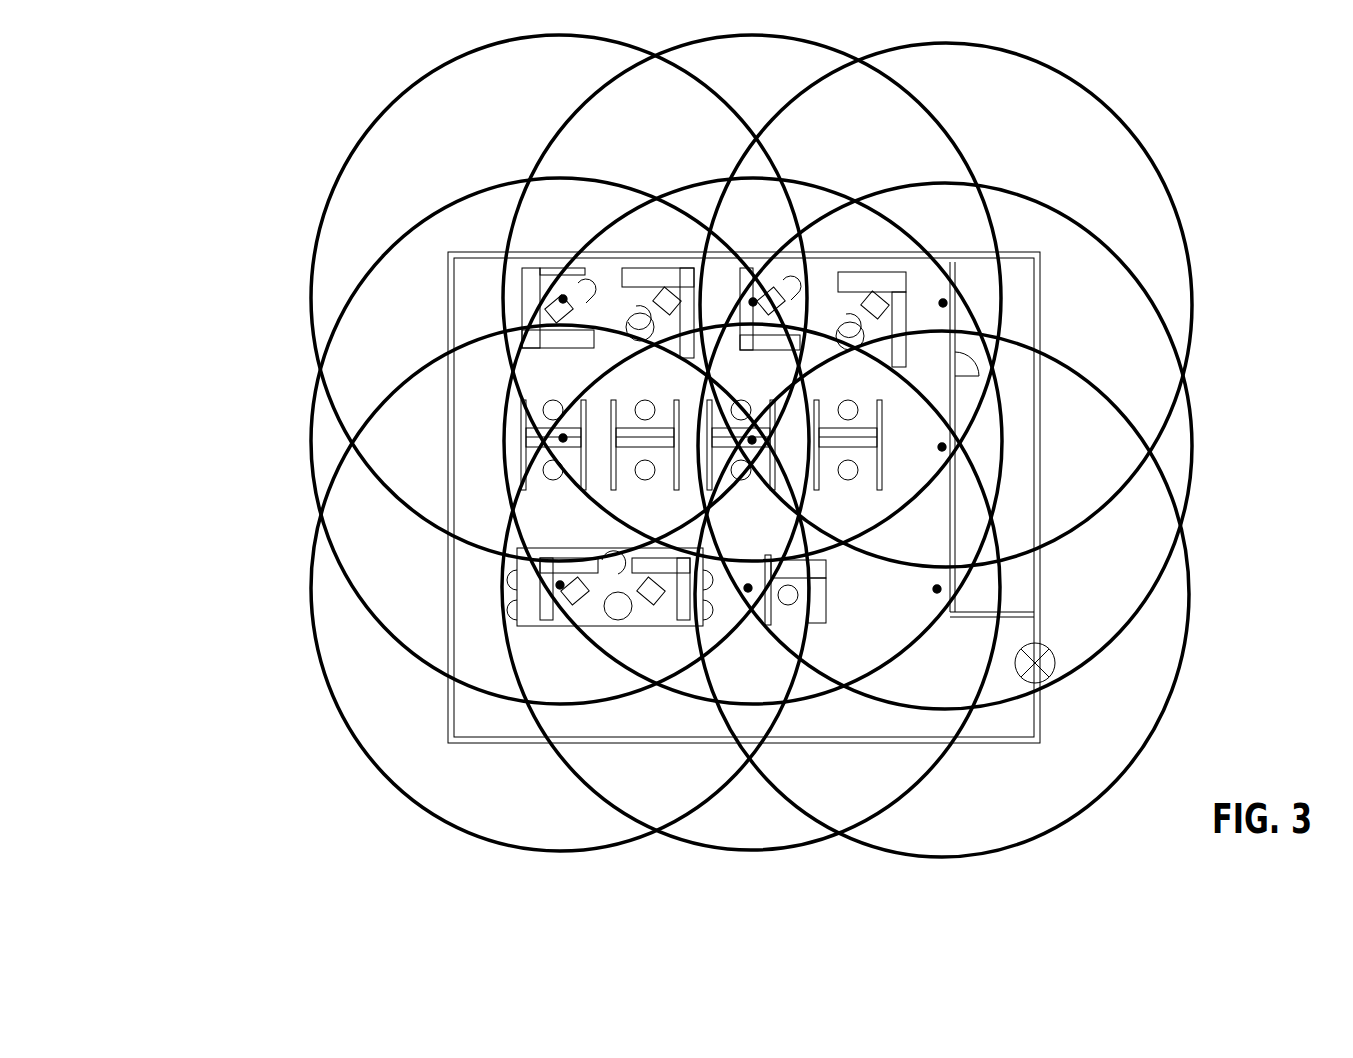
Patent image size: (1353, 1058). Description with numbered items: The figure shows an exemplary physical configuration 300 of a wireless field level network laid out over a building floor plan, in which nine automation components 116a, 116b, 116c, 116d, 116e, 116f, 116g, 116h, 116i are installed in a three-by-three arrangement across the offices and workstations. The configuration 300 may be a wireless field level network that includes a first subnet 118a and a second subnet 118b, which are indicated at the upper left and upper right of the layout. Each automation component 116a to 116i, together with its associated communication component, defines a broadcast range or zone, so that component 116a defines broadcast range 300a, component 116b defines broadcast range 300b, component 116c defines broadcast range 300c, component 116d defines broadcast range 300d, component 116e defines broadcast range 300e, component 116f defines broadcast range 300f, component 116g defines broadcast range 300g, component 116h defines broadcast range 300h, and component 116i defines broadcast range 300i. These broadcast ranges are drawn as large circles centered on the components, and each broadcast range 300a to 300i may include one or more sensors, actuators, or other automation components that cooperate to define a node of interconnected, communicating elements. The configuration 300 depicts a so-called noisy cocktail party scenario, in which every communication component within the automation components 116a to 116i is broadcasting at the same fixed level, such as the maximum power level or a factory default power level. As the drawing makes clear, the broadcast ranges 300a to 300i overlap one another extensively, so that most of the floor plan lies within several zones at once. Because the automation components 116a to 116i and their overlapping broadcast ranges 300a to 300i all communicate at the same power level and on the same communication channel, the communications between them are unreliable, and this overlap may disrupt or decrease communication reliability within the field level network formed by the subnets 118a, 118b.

The physical configuration 300 is at (1160, 68).
The broadcast range 300a is at (488, 50).
The broadcast range 300b is at (712, 39).
The broadcast range 300c is at (1016, 55).
The broadcast range 300d is at (314, 462).
The broadcast range 300e is at (695, 185).
The broadcast range 300f is at (1191, 441).
The broadcast range 300g is at (430, 808).
The broadcast range 300h is at (708, 844).
The broadcast range 300i is at (1144, 745).
The automation component 116a is at (563, 299).
The automation component 116b is at (753, 302).
The automation component 116c is at (943, 303).
The automation component 116d is at (563, 438).
The automation component 116e is at (752, 440).
The automation component 116f is at (942, 447).
The automation component 116g is at (560, 585).
The automation component 116h is at (748, 588).
The automation component 116i is at (937, 589).
The first subnet 118a is at (310, 97).
The second subnet 118b is at (1228, 247).